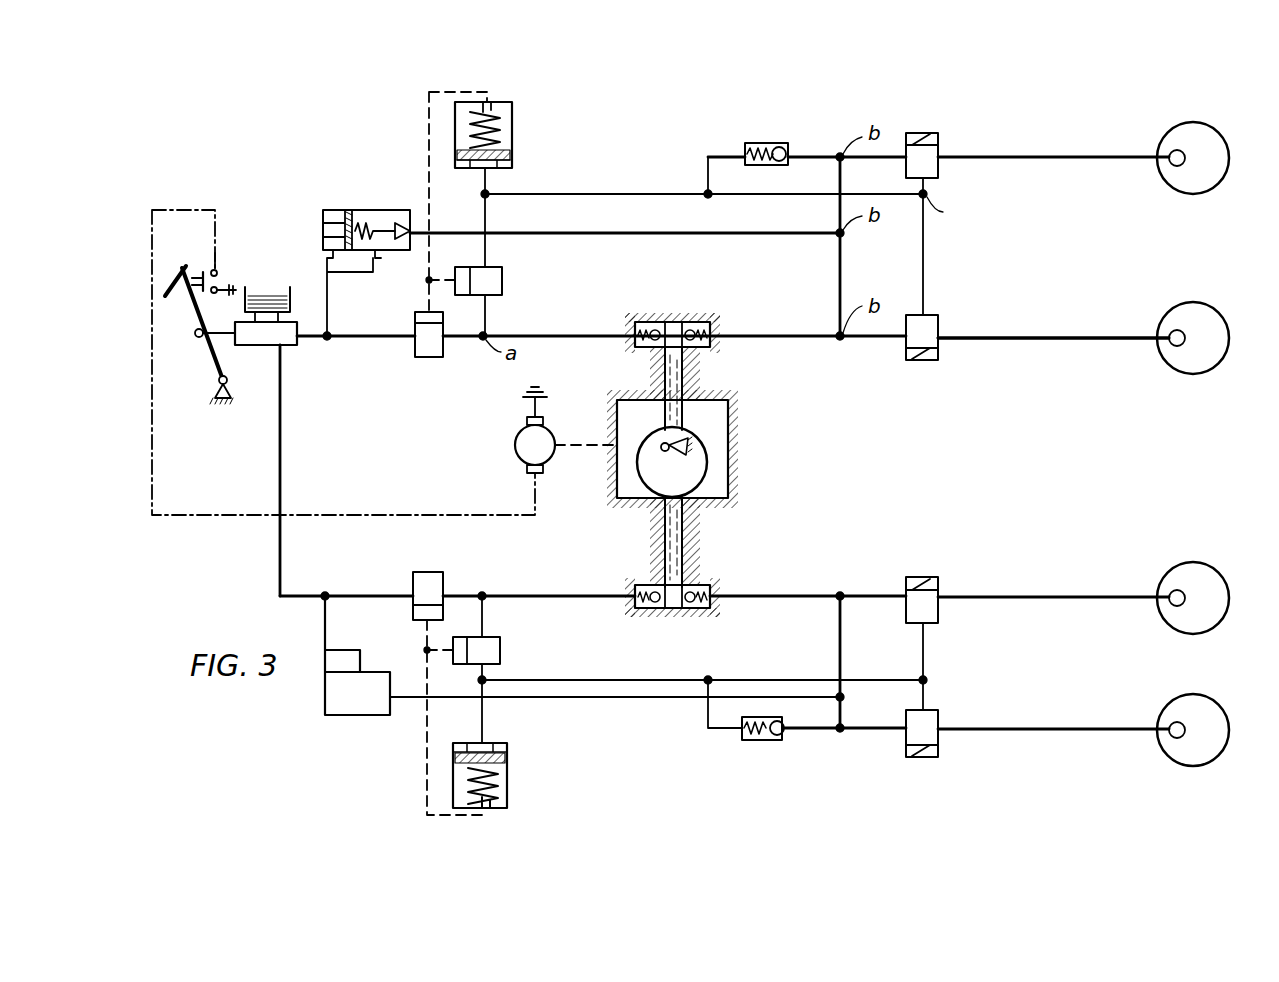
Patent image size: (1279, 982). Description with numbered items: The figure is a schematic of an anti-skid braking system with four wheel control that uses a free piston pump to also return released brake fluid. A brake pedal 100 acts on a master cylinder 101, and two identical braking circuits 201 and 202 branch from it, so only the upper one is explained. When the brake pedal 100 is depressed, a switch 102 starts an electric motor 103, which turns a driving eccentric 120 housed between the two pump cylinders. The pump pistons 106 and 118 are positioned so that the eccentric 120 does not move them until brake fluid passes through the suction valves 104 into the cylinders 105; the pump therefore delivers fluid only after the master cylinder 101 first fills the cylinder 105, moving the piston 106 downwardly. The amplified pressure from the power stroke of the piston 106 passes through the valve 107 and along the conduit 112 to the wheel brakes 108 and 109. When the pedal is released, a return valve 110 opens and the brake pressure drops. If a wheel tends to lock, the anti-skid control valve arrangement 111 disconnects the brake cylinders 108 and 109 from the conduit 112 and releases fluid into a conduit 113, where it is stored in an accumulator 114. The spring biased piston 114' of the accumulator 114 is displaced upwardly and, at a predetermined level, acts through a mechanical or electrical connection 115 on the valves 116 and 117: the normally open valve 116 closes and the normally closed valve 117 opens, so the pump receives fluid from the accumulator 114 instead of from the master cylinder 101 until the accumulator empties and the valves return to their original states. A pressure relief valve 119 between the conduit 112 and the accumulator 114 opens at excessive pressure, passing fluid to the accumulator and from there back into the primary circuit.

The brake pedal 100 is at (192, 318).
The master cylinder 101 is at (296, 338).
The switch 102 is at (218, 272).
The electric motor 103 is at (515, 455).
The suction valve 104 is at (638, 320).
The cylinder 105 is at (677, 325).
The pump piston 106 is at (675, 380).
The valve 107 is at (718, 320).
The wheel brake 108 is at (1163, 145).
The wheel brake 109 is at (1165, 360).
The return valve 110 is at (335, 208).
The anti-skid control valve arrangement 111 is at (942, 172).
The conduit 112 is at (812, 340).
The conduit 113 is at (652, 190).
The accumulator 114 is at (512, 135).
The spring biased piston 114' is at (516, 165).
The mechanical or electrical connection 115 is at (429, 93).
The valve 116 is at (431, 353).
The valve 117 is at (503, 278).
The pump piston 118 is at (675, 558).
The pressure relief valve 119 is at (782, 143).
The driving eccentric 120 is at (700, 458).
The braking circuit 201 is at (872, 340).
The braking circuit 202 is at (843, 590).